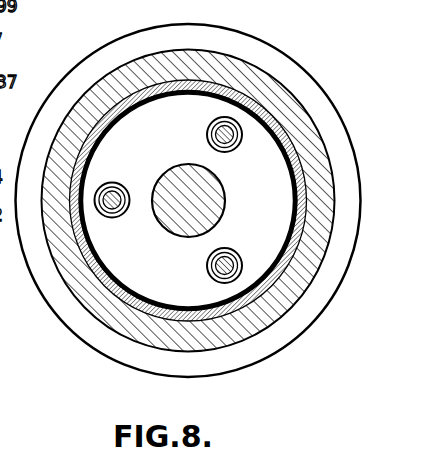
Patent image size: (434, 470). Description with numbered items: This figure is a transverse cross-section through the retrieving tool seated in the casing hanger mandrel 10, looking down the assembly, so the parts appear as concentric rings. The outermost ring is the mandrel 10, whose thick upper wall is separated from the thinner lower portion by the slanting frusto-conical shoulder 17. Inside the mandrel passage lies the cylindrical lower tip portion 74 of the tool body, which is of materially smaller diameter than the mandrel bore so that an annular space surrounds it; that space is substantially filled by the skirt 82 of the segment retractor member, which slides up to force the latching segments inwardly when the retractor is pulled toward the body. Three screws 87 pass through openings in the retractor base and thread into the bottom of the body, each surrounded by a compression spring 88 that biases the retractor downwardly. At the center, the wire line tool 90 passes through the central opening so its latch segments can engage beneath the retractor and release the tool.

The hanger mandrel 10 is at (334, 100).
The frusto-conical shoulder 17 is at (172, 366).
The cylindrical portion 74 is at (278, 214).
The skirt 82 is at (113, 112).
The screws 87 is at (210, 268).
The compression spring 88 is at (224, 283).
The wire line tool 90 is at (227, 176).